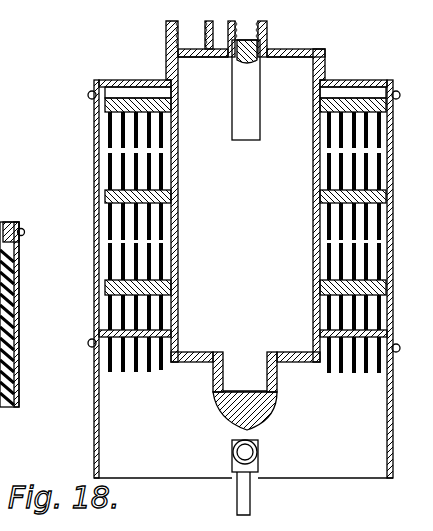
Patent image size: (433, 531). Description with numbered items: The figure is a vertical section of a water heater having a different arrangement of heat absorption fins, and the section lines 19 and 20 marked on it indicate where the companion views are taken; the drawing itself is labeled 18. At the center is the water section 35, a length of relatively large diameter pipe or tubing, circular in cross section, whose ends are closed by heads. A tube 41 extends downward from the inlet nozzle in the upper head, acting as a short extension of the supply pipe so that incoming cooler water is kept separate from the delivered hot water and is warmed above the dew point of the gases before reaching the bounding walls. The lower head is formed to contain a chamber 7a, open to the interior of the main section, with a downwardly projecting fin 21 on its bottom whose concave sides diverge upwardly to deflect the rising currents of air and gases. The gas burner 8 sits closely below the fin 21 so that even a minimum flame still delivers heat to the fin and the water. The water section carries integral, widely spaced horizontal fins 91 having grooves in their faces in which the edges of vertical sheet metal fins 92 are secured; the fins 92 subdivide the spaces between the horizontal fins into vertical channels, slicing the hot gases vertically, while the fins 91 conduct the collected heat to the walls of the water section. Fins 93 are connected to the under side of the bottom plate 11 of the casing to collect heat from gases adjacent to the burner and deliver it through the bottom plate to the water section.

The chamber 7a is at (250, 370).
The gas burner 8 is at (232, 452).
The bottom plate 11 is at (185, 331).
The section line 18 is at (180, 526).
The section line 19 is at (376, 20).
The section line 20 is at (75, 283).
The fin 21 is at (252, 428).
The water section 35 is at (182, 223).
The tube 41 is at (246, 114).
The horizontal fins 91 is at (135, 88).
The sheet metal fins 92 is at (122, 140).
The fins 93 is at (151, 374).